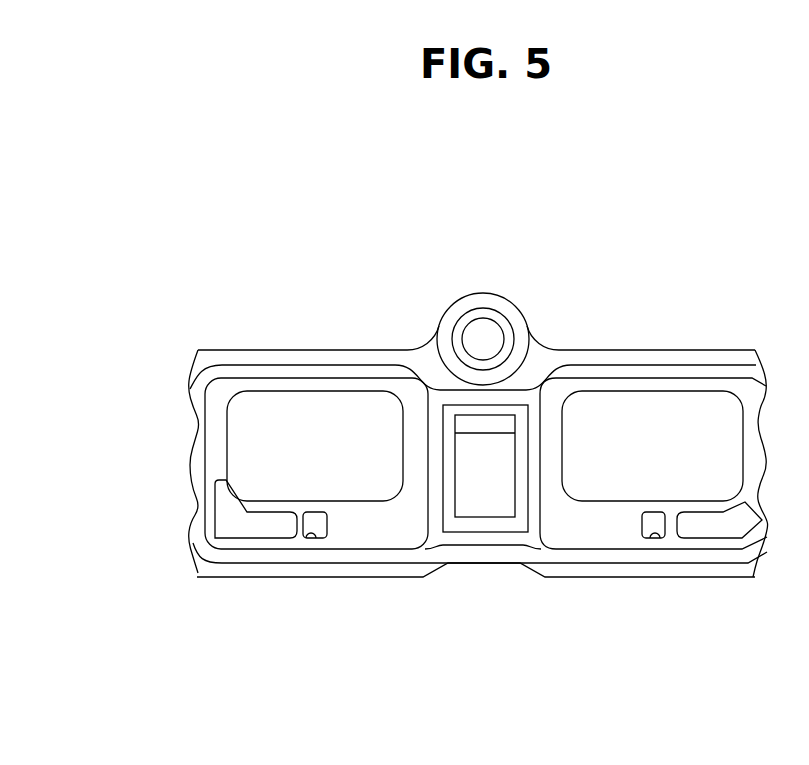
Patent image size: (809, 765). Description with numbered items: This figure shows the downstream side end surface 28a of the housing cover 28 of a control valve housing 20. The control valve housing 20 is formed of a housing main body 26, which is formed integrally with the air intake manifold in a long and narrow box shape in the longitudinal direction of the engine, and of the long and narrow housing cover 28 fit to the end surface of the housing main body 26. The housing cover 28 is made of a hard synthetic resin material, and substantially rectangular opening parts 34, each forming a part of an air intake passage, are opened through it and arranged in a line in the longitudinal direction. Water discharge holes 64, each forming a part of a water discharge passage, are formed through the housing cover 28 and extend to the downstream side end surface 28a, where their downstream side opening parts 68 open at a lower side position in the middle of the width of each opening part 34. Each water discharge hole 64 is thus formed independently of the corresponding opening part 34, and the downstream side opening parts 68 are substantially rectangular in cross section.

The control valve housing 20 is at (419, 441).
The housing main body 26 is at (282, 358).
The housing cover 28 is at (343, 392).
The downstream side end surface 28a is at (210, 470).
The opening part 34 is at (662, 391).
The downstream side opening part 68 is at (307, 532).
The water discharge hole 64 is at (477, 611).